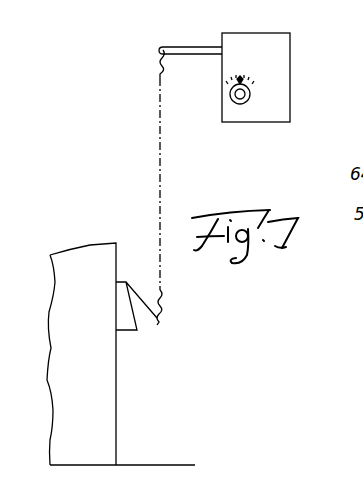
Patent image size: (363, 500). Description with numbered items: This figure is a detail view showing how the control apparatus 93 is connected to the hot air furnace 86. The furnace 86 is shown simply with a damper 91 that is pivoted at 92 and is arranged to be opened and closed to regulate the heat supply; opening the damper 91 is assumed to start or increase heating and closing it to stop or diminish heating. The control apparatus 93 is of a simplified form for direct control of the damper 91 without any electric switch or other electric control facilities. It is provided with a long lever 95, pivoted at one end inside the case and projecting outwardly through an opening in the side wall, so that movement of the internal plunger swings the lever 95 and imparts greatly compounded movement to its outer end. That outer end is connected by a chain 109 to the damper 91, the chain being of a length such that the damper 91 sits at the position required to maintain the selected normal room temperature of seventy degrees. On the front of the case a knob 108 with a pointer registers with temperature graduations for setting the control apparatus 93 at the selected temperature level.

The furnace 86 is at (88, 337).
The damper 91 is at (157, 325).
The pivot 92 is at (126, 282).
The control apparatus 93 is at (290, 70).
The long lever 95 is at (193, 47).
The knob 108 is at (250, 95).
The chain 109 is at (157, 103).